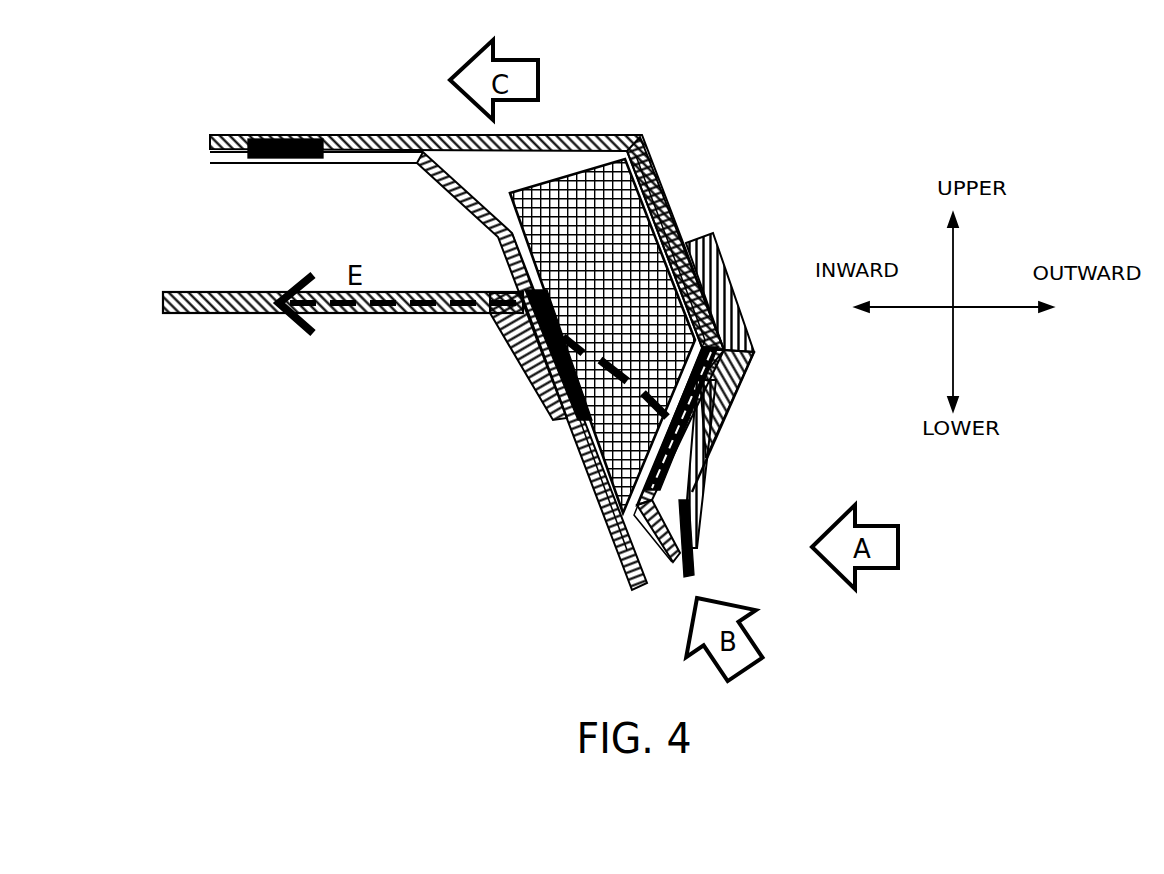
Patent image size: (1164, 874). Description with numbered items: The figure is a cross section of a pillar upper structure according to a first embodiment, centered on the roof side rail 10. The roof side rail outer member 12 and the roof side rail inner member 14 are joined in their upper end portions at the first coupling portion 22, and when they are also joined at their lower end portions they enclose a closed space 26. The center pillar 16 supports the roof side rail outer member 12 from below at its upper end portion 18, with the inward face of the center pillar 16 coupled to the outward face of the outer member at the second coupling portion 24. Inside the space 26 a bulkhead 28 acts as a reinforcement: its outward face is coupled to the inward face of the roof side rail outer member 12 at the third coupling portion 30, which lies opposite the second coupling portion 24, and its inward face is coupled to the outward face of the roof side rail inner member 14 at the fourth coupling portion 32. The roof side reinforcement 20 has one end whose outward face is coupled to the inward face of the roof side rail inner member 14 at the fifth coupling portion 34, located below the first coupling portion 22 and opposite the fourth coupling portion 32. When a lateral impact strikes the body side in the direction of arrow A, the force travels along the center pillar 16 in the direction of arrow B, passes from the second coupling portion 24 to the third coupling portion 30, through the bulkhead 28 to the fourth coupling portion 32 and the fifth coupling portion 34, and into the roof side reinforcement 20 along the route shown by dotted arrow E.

The roof side rail 10 is at (416, 114).
The roof side rail outer member 12 is at (652, 156).
The roof side rail inner member 14 is at (584, 485).
The center pillar 16 is at (705, 528).
The upper end portion 18 is at (705, 435).
The roof side reinforcement 20 is at (244, 313).
The first coupling portion 22 is at (290, 135).
The second coupling portion 24 is at (712, 412).
The closed space 26 is at (514, 188).
The bulkhead 28 is at (683, 235).
The third coupling portion 30 is at (655, 365).
The fourth coupling portion 32 is at (540, 418).
The fifth coupling portion 34 is at (517, 352).